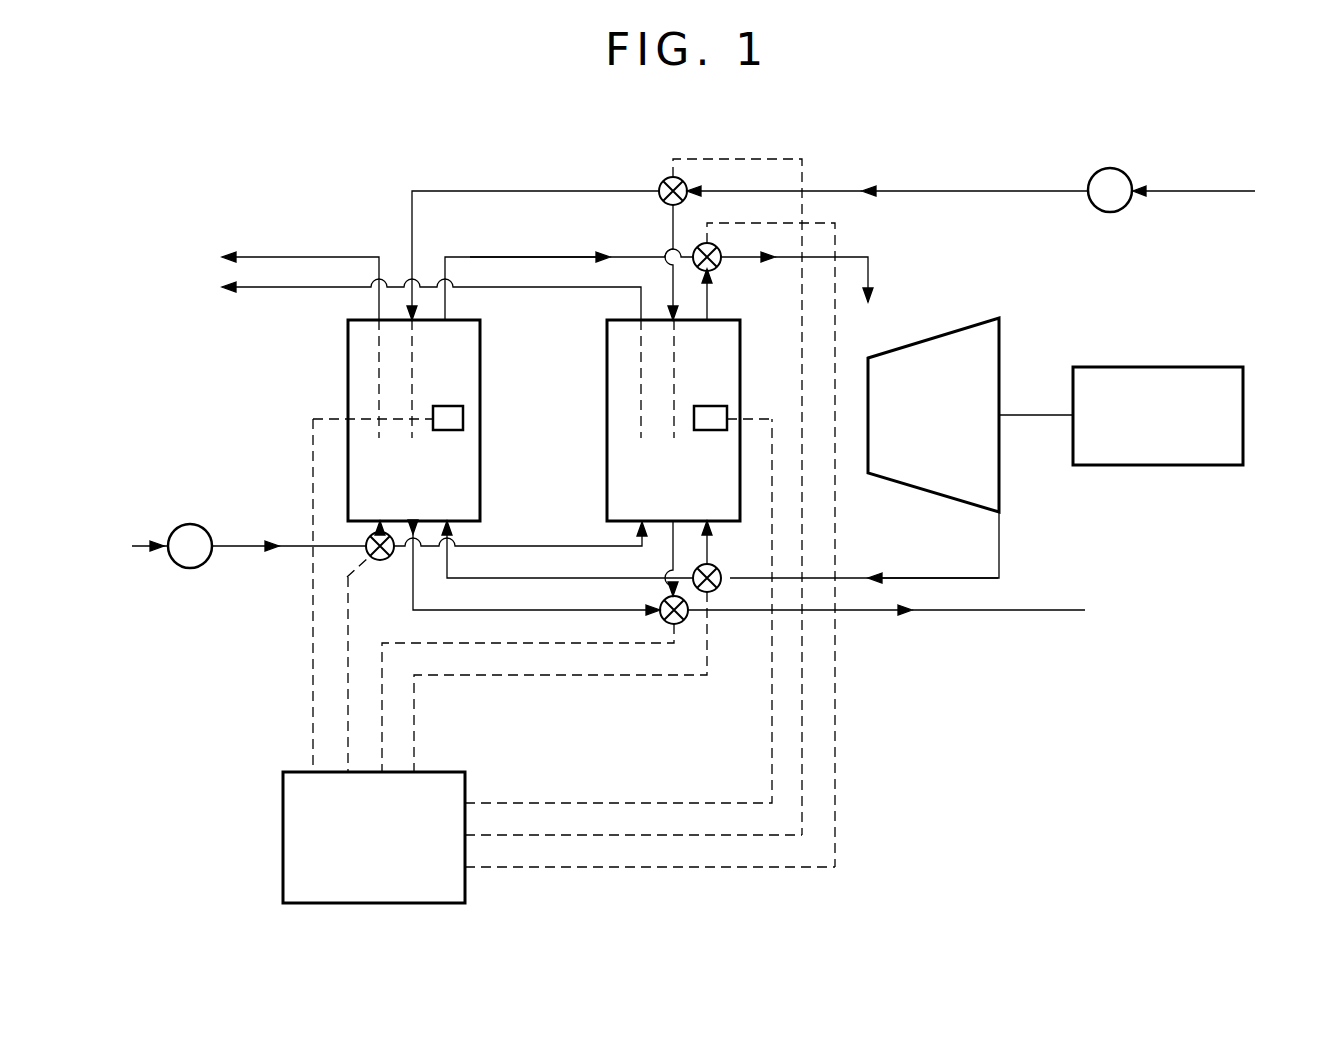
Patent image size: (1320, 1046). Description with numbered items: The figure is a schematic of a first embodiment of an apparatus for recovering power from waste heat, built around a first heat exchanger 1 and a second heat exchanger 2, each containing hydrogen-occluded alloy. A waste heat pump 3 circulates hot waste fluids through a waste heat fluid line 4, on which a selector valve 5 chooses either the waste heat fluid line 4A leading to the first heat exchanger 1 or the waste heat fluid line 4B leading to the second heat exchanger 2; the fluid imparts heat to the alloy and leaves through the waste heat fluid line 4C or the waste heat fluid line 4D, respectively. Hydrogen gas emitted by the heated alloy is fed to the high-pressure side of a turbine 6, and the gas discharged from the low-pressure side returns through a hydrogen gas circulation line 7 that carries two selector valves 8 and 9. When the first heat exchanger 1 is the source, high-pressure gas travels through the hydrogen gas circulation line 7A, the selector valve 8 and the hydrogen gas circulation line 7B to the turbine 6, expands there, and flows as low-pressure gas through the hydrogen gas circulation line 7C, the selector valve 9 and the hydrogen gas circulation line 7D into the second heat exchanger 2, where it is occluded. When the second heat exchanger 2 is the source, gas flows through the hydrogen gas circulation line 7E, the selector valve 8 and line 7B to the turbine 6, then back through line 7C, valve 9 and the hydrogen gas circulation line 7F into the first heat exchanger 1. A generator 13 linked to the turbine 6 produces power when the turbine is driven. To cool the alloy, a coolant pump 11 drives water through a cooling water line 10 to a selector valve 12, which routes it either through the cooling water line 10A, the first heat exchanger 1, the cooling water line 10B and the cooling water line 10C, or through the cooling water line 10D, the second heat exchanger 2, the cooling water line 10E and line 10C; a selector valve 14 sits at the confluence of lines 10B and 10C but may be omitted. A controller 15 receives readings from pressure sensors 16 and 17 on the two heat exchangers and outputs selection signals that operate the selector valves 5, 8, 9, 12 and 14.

The first heat exchanger 1 is at (348, 357).
The second heat exchanger 2 is at (607, 361).
The waste heat pump 3 is at (176, 566).
The waste heat fluid line 4 is at (237, 549).
The waste heat fluid line 4A is at (372, 530).
The waste heat fluid line 4B is at (565, 546).
The waste heat fluid line 4C is at (268, 257).
The waste heat fluid line 4D is at (508, 287).
The selector valve 5 is at (386, 562).
The turbine 6 is at (1003, 345).
The hydrogen gas circulation line 7 is at (555, 257).
The hydrogen gas circulation line 7A is at (465, 257).
The hydrogen gas circulation line 7B is at (852, 257).
The hydrogen gas circulation line 7C is at (973, 580).
The hydrogen gas circulation line 7D is at (495, 580).
The hydrogen gas circulation line 7E is at (708, 307).
The hydrogen gas circulation line 7F is at (708, 542).
The selector valve 8 is at (720, 248).
The selector valve 9 is at (716, 590).
The cooling water line 10 is at (888, 191).
The cooling water line 10A is at (412, 191).
The cooling water line 10B is at (620, 612).
The cooling water line 10C is at (955, 612).
The cooling water line 10D is at (675, 288).
The cooling water line 10E is at (672, 547).
The coolant pump 11 is at (1116, 172).
The selector valve 12 is at (667, 178).
The generator 13 is at (1175, 367).
The selector valve 14 is at (682, 624).
The controller 15 is at (283, 840).
The pressure sensor 16 is at (446, 406).
The pressure sensor 17 is at (710, 406).